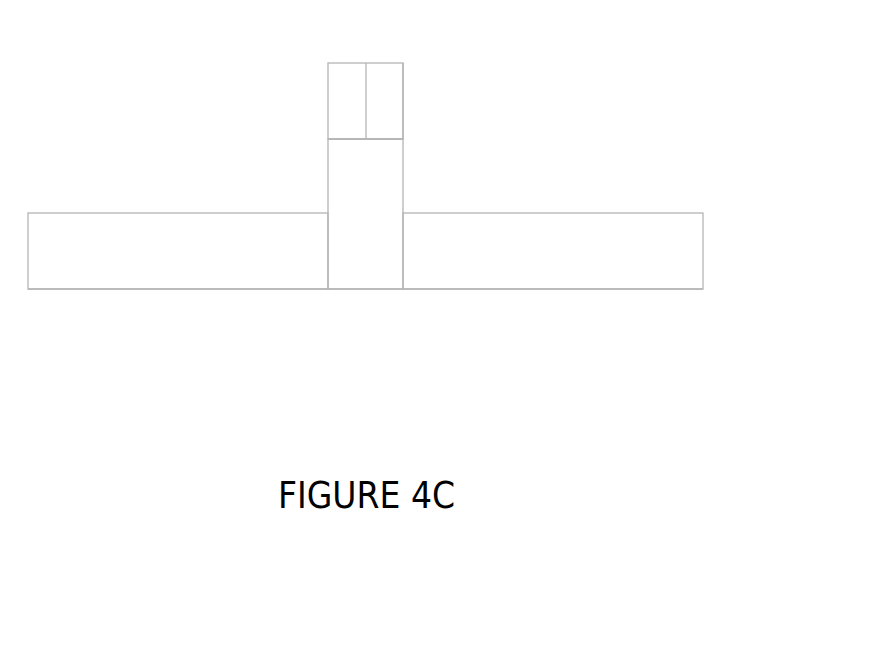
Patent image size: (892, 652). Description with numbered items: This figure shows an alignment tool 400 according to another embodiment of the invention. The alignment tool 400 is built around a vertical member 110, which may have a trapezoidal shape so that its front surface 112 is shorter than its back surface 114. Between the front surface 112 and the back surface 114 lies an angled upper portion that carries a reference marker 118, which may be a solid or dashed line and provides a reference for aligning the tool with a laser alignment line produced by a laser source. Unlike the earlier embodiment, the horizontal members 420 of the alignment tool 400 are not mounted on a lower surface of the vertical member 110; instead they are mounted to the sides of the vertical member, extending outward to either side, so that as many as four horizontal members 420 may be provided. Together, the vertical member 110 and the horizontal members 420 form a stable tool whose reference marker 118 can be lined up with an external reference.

The alignment tool 400 is at (732, 356).
The horizontal members 420 is at (365, 251).
The vertical member 110 is at (365, 214).
The front surface 112 is at (413, 149).
The back surface 114 is at (413, 102).
The reference marker 118 is at (375, 54).